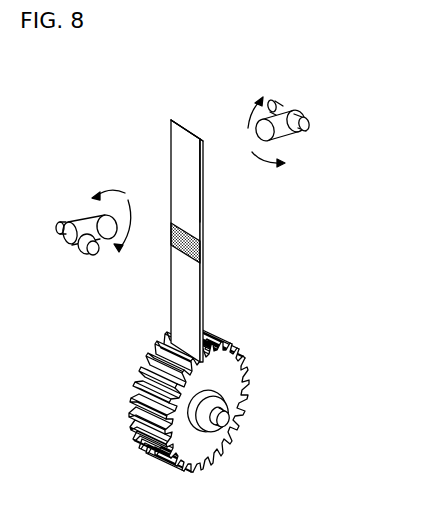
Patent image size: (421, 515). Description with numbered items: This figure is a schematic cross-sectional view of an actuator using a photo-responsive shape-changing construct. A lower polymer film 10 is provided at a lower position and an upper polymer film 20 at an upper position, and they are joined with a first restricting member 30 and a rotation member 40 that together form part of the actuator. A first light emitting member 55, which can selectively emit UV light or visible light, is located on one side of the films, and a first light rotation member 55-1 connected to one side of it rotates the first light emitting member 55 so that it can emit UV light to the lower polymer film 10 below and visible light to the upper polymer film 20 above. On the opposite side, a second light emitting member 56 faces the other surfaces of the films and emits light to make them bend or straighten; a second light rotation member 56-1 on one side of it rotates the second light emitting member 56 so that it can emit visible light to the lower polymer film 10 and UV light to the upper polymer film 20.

The 1-1 polymer film 10 is at (203, 302).
The 1-2 polymer film 20 is at (203, 200).
The first restricting member 30 is at (203, 250).
The rotation member 40 is at (241, 415).
The first light emitting member 55 is at (280, 133).
The first light rotation member 55-1 is at (292, 112).
The second light emitting member 56 is at (98, 222).
The second light rotation member 56-1 is at (74, 246).